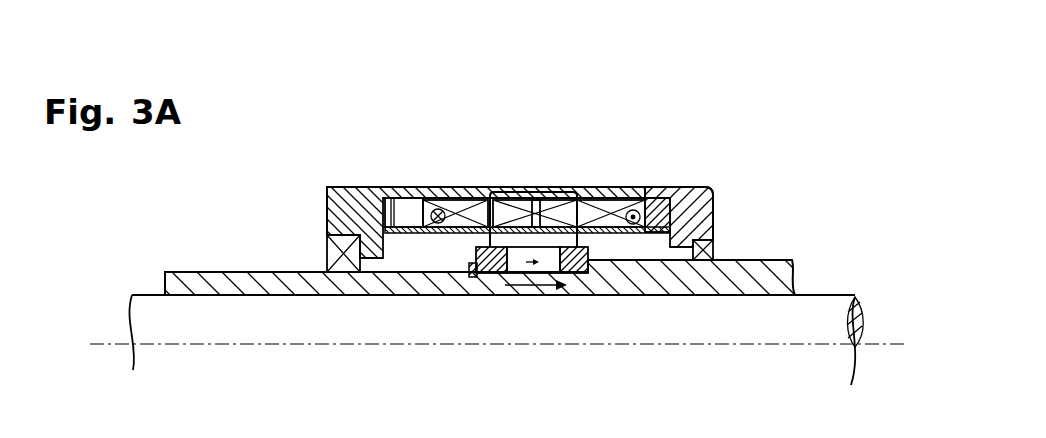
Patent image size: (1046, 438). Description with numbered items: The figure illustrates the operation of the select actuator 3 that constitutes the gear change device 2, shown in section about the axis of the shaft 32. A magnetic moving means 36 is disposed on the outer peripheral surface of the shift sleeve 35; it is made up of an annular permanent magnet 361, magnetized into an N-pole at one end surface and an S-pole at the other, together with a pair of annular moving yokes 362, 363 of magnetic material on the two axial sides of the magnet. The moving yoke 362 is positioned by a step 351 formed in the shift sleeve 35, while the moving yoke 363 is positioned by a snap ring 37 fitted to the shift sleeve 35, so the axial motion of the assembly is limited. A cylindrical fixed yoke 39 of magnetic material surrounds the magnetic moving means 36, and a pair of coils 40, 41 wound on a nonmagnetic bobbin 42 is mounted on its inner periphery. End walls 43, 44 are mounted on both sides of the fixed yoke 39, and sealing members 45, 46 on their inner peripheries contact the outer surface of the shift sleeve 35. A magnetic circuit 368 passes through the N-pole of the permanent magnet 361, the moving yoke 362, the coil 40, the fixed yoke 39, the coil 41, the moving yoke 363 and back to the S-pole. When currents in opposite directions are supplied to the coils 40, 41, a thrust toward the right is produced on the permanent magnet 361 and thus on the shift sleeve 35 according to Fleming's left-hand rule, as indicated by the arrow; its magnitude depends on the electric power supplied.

The gear change device 2 is at (622, 113).
The select actuator 3 is at (543, 181).
The shaft 32 is at (213, 315).
The shift sleeve 35 is at (233, 283).
The magnetic moving means 36 is at (385, 200).
The snap ring 37 is at (469, 274).
The fixed yoke 39 is at (490, 190).
The coil 40 is at (585, 212).
The coil 41 is at (470, 202).
The bobbin 42 is at (468, 252).
The end wall 43 is at (713, 232).
The end wall 44 is at (338, 217).
The sealing member 45 is at (713, 250).
The sealing member 46 is at (328, 262).
The step 351 is at (594, 266).
The permanent magnet 361 is at (541, 274).
The moving yoke 362 is at (573, 275).
The moving yoke 363 is at (495, 275).
The magnetic circuit 368 is at (533, 191).